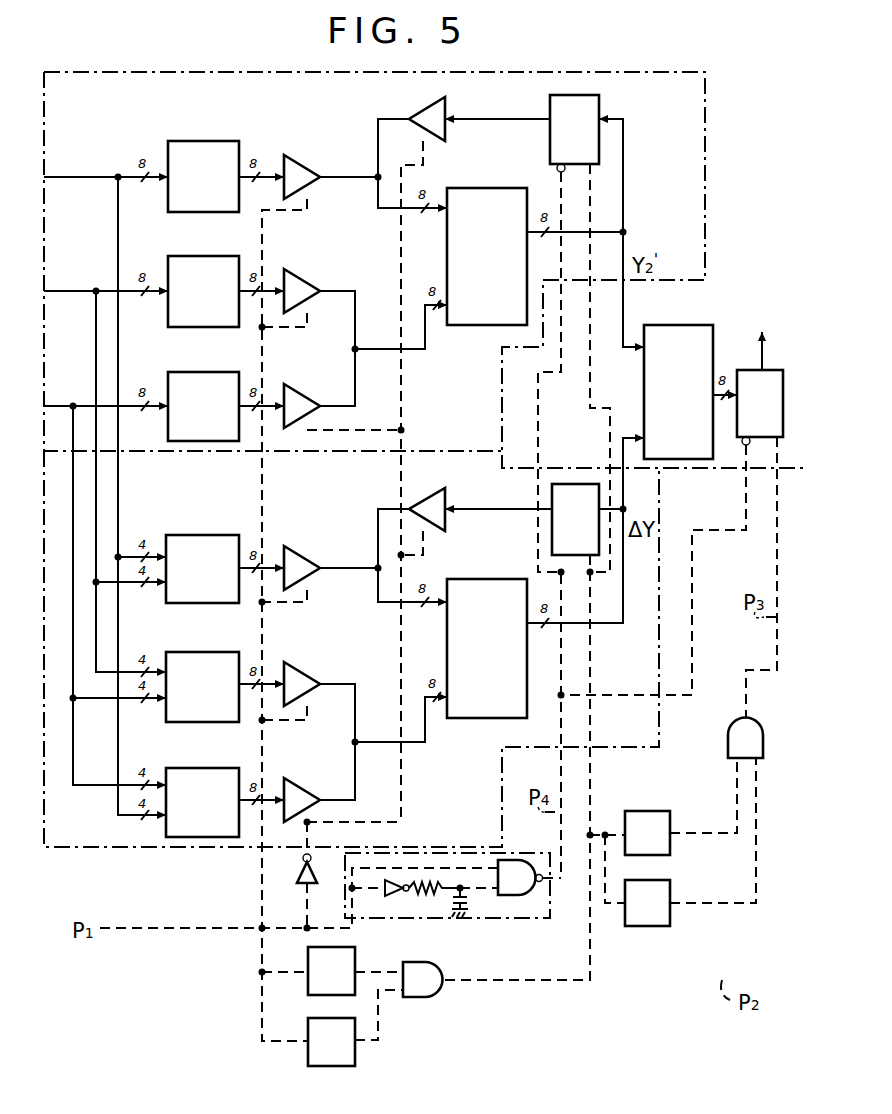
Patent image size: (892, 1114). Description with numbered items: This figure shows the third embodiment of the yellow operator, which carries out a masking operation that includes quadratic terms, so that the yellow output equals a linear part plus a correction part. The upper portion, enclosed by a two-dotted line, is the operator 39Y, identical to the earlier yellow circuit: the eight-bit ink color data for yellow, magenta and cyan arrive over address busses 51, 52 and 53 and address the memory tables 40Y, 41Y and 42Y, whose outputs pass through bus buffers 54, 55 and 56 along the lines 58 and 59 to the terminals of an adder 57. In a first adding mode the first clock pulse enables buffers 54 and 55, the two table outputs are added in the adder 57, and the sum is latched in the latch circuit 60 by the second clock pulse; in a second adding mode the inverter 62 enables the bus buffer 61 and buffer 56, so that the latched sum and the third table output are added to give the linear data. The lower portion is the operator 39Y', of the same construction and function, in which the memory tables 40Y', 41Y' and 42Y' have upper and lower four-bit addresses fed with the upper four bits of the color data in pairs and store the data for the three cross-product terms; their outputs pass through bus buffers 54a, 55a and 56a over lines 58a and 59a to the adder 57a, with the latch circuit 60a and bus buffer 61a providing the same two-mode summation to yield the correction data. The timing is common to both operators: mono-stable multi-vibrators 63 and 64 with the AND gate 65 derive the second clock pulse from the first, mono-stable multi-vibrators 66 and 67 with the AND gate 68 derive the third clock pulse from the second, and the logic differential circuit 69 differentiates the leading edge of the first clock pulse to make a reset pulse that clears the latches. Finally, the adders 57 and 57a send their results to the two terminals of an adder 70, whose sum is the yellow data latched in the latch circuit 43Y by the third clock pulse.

The yellow color operator 39Y is at (423, 270).
The operator 39Y' is at (351, 674).
The memory table 40Y is at (203, 176).
The memory table 41Y is at (203, 291).
The memory table 42Y is at (203, 406).
The memory table 40Y' is at (202, 570).
The memory table 41Y' is at (202, 687).
The memory table 42Y' is at (202, 803).
The latch circuit 43Y is at (740, 370).
The address bus 51 is at (97, 178).
The address bus 52 is at (86, 293).
The address bus 53 is at (62, 408).
The bus buffer 54 is at (306, 168).
The bus buffer 55 is at (306, 282).
The bus buffer 56 is at (304, 398).
The bus buffer 54a is at (300, 556).
The bus buffer 55a is at (302, 672).
The bus buffer 56a is at (300, 790).
The adder 57 is at (470, 327).
The adder 57a is at (470, 720).
The data bus 58 is at (347, 180).
The data bus 58a is at (346, 571).
The data bus 59 is at (377, 351).
The data bus 59a is at (376, 740).
The latch circuit 60 is at (550, 105).
The latch circuit 60a is at (578, 484).
The bus buffer 61 is at (418, 104).
The bus buffer 61a is at (424, 500).
The inverter 62 is at (300, 878).
The mono-stable multi-vibrator 63 is at (355, 968).
The mono-stable multi-vibrator 64 is at (355, 1056).
The AND gate 65 is at (428, 996).
The mono-stable multi-vibrator 66 is at (670, 822).
The mono-stable multi-vibrator 67 is at (668, 882).
The AND gate 68 is at (728, 748).
The logic differential circuit 69 is at (488, 918).
The adder 70 is at (692, 326).